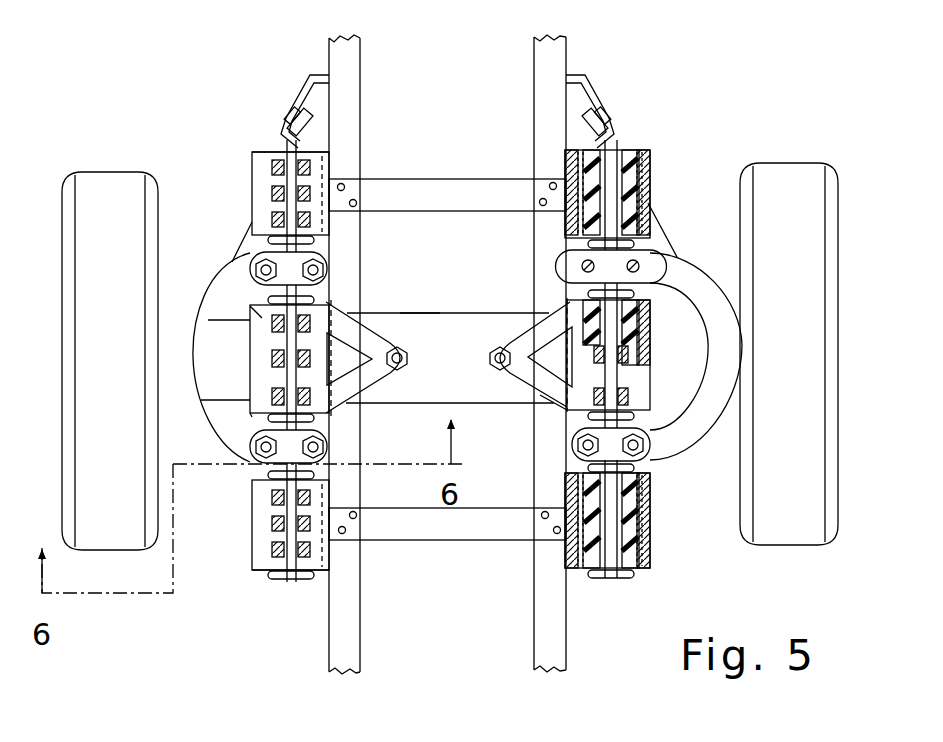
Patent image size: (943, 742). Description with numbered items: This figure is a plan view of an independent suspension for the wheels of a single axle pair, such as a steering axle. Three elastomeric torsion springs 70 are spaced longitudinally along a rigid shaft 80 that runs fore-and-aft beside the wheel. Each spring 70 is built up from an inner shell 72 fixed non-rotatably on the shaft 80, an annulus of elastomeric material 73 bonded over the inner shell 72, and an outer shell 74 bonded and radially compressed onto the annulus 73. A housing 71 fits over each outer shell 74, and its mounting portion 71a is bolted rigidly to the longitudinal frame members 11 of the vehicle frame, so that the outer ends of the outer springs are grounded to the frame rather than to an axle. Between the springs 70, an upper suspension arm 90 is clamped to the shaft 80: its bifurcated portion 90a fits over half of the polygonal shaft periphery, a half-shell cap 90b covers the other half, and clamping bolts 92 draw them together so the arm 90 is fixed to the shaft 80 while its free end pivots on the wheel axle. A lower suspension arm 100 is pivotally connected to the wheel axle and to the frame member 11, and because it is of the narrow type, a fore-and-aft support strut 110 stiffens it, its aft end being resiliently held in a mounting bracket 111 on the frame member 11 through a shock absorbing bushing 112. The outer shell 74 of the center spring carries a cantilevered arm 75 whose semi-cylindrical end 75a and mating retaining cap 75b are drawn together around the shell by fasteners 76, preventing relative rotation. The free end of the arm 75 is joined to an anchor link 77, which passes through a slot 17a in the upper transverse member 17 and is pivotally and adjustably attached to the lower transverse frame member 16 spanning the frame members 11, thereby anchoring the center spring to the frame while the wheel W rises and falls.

The longitudinal frame member 11 is at (545, 38).
The lower transverse frame member 16 is at (453, 376).
The upper transverse member 17 is at (463, 405).
The slot 17a is at (422, 350).
The elastomeric torsion spring 70 is at (253, 146).
The housing 71 is at (258, 200).
The mounting portion 71a is at (534, 163).
The inner shell 72 is at (618, 148).
The annulus of elastomeric material 73 is at (629, 148).
The outer shell 74 is at (636, 148).
The arm 75 is at (555, 298).
The end of the arm 75a is at (567, 410).
The retaining cap 75b is at (250, 417).
The fasteners 76 is at (252, 312).
The anchor link 77 is at (560, 321).
The rigid shaft 80 is at (300, 292).
The upper suspension arm 90 is at (170, 394).
The bifurcated portion 90a is at (243, 235).
The half-shell cap 90b is at (300, 260).
The clamping bolts 92 is at (278, 442).
The lower suspension arm 100 is at (213, 337).
The fore-and-aft support strut 110 is at (664, 249).
The mounting bracket 111 is at (300, 97).
The shock absorbing bushing 112 is at (290, 124).
The wheel W is at (803, 163).